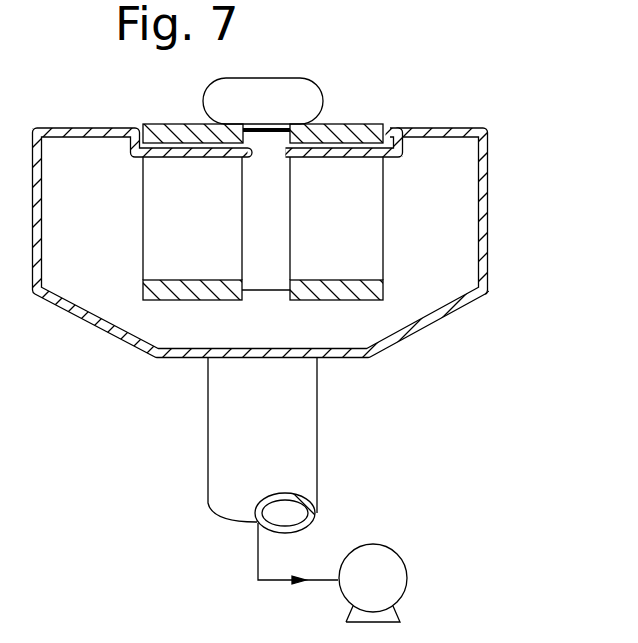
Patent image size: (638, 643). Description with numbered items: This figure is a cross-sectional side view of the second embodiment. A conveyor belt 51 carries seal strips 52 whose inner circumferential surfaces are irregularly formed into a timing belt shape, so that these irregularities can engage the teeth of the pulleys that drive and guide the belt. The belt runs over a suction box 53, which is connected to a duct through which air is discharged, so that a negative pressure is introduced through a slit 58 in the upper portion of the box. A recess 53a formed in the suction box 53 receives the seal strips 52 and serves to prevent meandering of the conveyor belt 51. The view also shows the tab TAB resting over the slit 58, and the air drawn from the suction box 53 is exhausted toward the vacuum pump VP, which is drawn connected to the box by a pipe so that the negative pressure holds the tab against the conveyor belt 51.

The conveyor belt 51 is at (317, 447).
The seal strip 52 is at (386, 128).
The suction box 53 is at (488, 227).
The recess of the suction box 53a is at (392, 130).
The slit 58 is at (291, 123).
The tab TAB is at (318, 80).
The vacuum pump VP is at (332, 572).